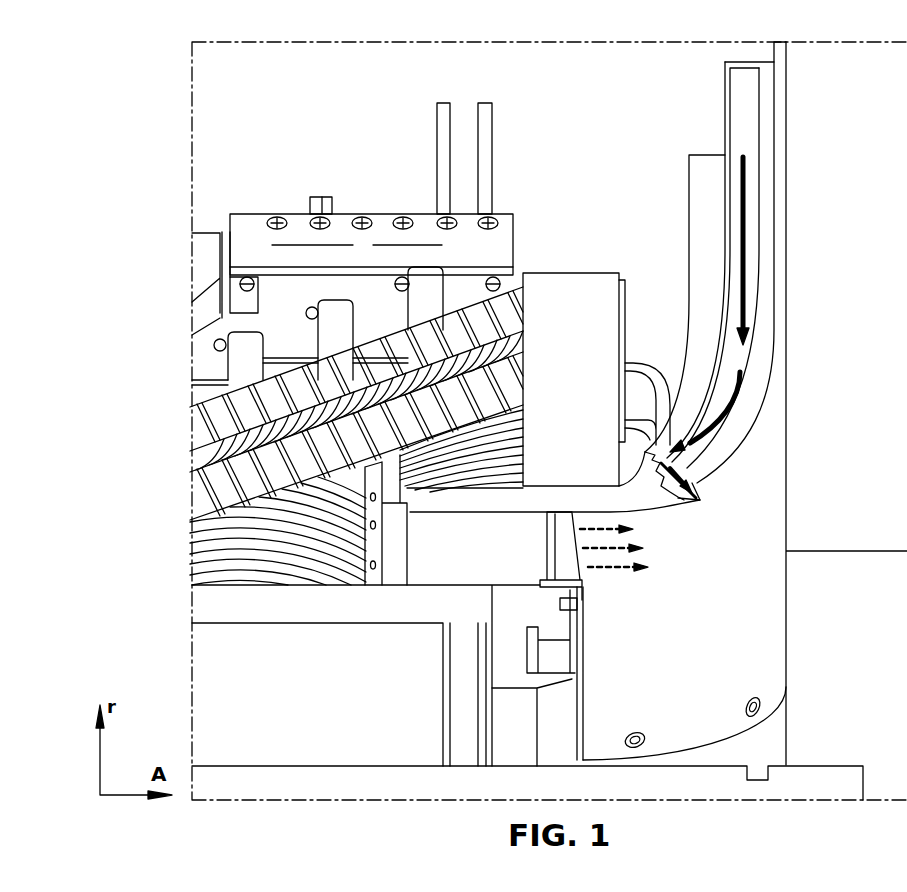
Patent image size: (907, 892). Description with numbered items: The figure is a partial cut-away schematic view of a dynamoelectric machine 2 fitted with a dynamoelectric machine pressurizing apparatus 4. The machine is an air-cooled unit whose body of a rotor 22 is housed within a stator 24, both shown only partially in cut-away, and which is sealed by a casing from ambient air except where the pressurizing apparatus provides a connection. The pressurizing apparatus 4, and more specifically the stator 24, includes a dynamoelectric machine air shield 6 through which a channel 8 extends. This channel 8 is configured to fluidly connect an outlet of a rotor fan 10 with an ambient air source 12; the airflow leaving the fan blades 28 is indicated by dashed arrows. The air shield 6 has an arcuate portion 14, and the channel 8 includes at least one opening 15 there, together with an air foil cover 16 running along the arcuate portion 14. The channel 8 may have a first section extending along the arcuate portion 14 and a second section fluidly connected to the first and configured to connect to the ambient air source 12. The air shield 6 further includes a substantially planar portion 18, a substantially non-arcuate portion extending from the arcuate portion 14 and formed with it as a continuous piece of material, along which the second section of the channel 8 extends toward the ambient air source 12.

The dynamoelectric machine 2 is at (165, 101).
The dynamoelectric machine pressurizing apparatus 4 is at (656, 150).
The dynamoelectric machine air shield 6 is at (696, 244).
The channel 8 is at (735, 113).
The rotor fan 10 is at (600, 616).
The ambient air source 12 is at (728, 56).
The arcuate portion 14 is at (741, 432).
The opening 15 is at (714, 504).
The air foil cover 16 is at (693, 524).
The substantially planar portion 18 is at (813, 333).
The rotor 22 is at (370, 742).
The stator 24 is at (360, 158).
The fan blades 28 is at (567, 567).